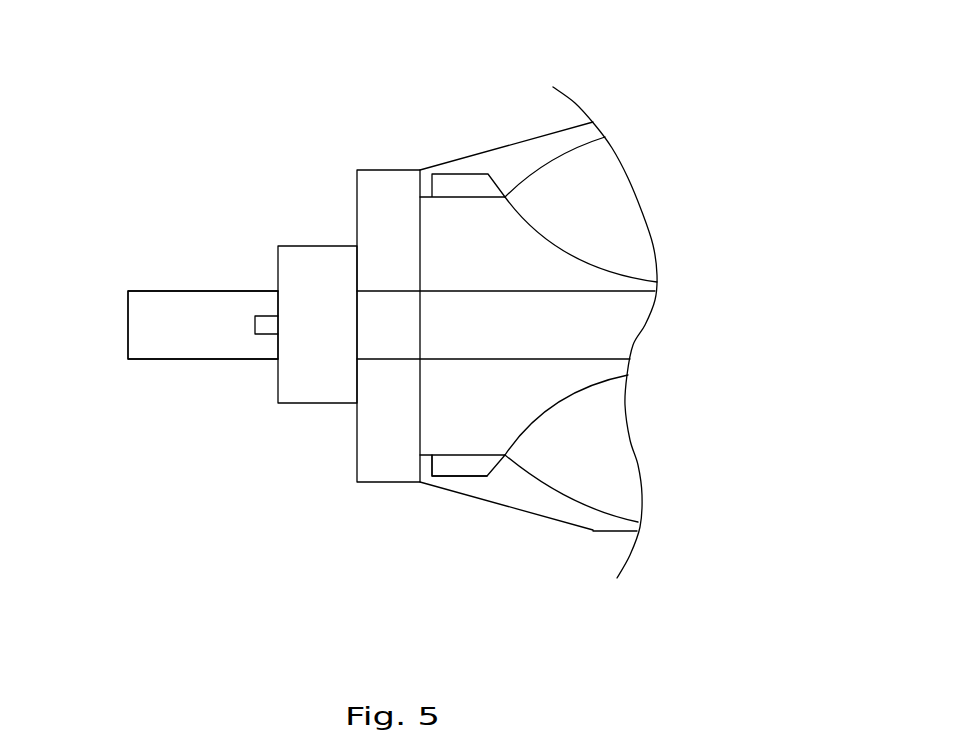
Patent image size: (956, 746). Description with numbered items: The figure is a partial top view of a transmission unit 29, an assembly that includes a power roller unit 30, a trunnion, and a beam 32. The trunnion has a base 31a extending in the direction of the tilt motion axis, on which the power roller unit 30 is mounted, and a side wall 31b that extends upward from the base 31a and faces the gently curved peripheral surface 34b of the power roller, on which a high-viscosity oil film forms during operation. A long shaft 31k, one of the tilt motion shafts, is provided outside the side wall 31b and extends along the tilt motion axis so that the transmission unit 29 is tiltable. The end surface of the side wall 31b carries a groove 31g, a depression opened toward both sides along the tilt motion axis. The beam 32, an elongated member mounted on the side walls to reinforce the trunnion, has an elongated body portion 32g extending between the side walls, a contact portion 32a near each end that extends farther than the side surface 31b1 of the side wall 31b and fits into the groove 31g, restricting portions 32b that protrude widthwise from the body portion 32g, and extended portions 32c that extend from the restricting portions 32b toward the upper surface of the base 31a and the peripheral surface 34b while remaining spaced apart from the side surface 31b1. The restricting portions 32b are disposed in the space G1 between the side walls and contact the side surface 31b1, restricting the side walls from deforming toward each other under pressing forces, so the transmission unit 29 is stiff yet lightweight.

The transmission unit 29 is at (158, 155).
The power roller unit 30 is at (565, 128).
The base 31a is at (547, 520).
The side wall 31b is at (362, 472).
The side surface 31b1 is at (420, 420).
The groove 31g is at (390, 287).
The long shaft 31k is at (165, 359).
The beam 32 is at (623, 265).
The contact portion 32a is at (355, 303).
The restricting portion 32b is at (420, 393).
The extended portion 32c is at (455, 465).
The body portion 32g is at (555, 359).
The peripheral surface 34b is at (547, 188).
The space G1 is at (538, 452).